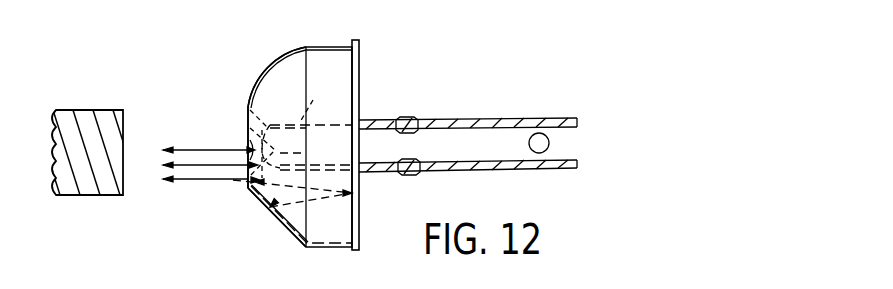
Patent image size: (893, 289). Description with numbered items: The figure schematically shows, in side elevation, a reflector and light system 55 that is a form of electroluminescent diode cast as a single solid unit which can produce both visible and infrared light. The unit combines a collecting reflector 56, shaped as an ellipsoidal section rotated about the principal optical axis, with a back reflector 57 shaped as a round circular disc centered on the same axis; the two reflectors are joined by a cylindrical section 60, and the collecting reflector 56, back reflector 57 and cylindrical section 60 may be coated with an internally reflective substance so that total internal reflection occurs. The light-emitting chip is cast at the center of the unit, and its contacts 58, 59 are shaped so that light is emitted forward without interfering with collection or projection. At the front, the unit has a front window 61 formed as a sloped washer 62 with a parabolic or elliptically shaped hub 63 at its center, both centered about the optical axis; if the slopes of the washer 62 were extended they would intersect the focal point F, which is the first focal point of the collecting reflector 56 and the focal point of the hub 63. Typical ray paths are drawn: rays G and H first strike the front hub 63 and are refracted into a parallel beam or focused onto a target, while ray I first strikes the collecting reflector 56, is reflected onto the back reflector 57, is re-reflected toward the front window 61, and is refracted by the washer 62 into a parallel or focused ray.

The reflector and light system 55 is at (268, 73).
The collecting reflector 56 is at (300, 63).
The back reflector 57 is at (360, 68).
The contact 58 is at (247, 118).
The contact 59 is at (313, 156).
The cylindrical section 60 is at (333, 47).
The front window 61 is at (245, 123).
The sloped washer 62 is at (238, 185).
The hub 63 is at (248, 150).
The focal point F is at (311, 97).
The ray G is at (232, 176).
The ray H is at (256, 207).
The ray I is at (281, 218).